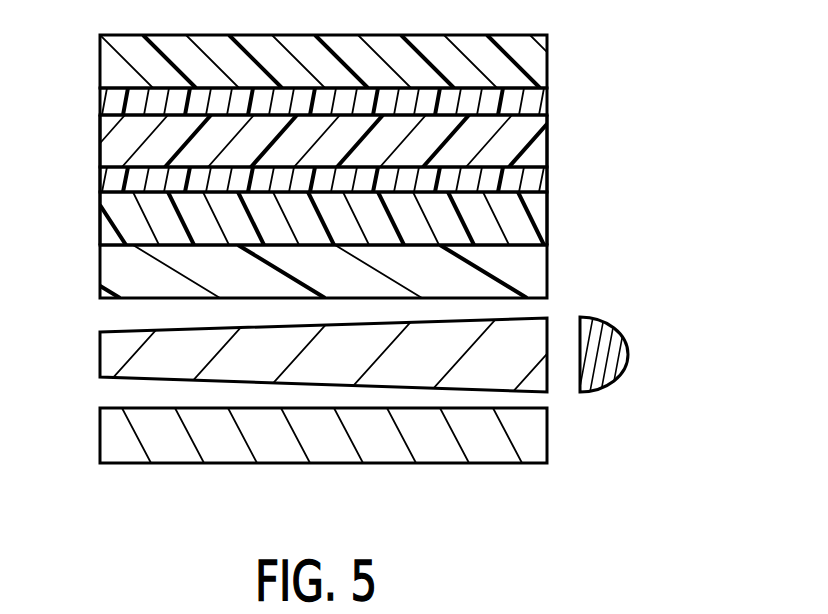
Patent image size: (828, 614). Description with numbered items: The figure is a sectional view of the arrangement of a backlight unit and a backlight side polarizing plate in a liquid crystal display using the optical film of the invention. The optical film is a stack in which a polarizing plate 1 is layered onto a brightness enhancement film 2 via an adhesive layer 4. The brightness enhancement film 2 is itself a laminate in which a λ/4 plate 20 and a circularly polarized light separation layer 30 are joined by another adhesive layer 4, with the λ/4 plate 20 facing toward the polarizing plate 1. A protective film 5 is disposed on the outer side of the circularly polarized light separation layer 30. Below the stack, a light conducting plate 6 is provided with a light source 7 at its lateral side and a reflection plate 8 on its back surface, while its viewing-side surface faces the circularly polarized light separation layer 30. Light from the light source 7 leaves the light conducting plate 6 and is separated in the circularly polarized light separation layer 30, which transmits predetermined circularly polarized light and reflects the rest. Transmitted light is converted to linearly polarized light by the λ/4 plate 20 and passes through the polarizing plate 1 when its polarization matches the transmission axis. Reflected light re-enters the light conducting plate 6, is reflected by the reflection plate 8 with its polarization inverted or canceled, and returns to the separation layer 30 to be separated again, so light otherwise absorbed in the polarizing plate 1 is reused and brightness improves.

The polarizing plate 1 is at (532, 65).
The brightness enhancement film 2 is at (385, 167).
The adhesive layer 4 is at (533, 108).
The λ/4 plate 20 is at (530, 141).
The circularly polarized light separation layer 30 is at (366, 226).
The protective film 5 is at (530, 275).
The light conducting plate 6 is at (119, 358).
The light source 7 is at (603, 353).
The reflection plate 8 is at (122, 433).